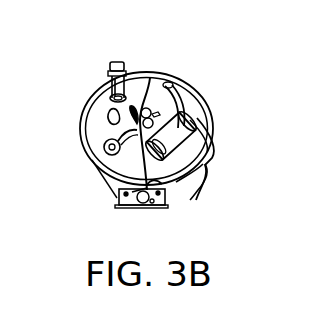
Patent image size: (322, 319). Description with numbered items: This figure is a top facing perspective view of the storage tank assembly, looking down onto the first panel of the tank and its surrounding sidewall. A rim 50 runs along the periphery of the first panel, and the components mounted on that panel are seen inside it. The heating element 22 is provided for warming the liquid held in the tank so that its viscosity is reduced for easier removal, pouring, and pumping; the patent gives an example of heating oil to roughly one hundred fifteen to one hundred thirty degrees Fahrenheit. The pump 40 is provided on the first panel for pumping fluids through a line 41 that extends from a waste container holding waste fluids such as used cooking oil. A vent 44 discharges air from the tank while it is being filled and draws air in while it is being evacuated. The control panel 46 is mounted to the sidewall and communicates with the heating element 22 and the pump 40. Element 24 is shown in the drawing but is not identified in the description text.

The heating element 22 is at (168, 82).
The bolt 24 is at (110, 84).
The pump 40 is at (208, 117).
The line 41 is at (205, 186).
The vent 44 is at (108, 112).
The control panel 46 is at (118, 204).
The rim 50 is at (142, 74).